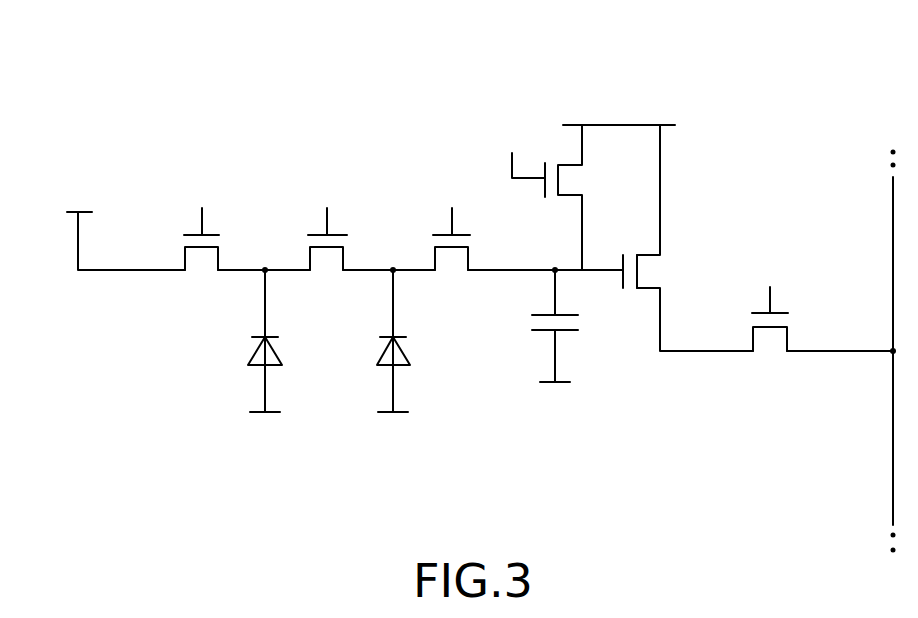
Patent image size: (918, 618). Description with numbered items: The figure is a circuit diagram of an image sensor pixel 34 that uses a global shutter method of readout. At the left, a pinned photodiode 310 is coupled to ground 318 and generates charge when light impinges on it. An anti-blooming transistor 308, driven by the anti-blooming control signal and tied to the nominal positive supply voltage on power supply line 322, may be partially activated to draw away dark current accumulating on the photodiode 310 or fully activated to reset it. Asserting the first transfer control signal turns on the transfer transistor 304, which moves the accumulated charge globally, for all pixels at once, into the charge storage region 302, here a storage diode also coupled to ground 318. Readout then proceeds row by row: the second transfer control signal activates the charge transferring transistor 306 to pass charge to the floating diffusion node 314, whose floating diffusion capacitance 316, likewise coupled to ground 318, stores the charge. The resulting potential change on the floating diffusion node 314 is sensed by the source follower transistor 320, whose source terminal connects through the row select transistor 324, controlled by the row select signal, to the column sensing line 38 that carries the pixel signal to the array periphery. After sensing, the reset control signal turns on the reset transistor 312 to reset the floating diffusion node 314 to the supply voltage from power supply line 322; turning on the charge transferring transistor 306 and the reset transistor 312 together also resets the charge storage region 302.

The image sensor pixel 34 is at (172, 66).
The power supply line 322 is at (72, 214).
The anti-blooming transistor 308 is at (202, 265).
The transfer transistor 304 is at (325, 265).
The charge transferring transistor 306 is at (452, 265).
The pinned photodiode 310 is at (280, 338).
The charge storage region 302 is at (378, 367).
The ground 318 is at (250, 412).
The floating diffusion node 314 is at (555, 268).
The floating diffusion capacitance 316 is at (540, 335).
The reset transistor 312 is at (570, 184).
The source follower transistor 320 is at (665, 260).
The row select transistor 324 is at (768, 340).
The column sensing line 38 is at (893, 215).